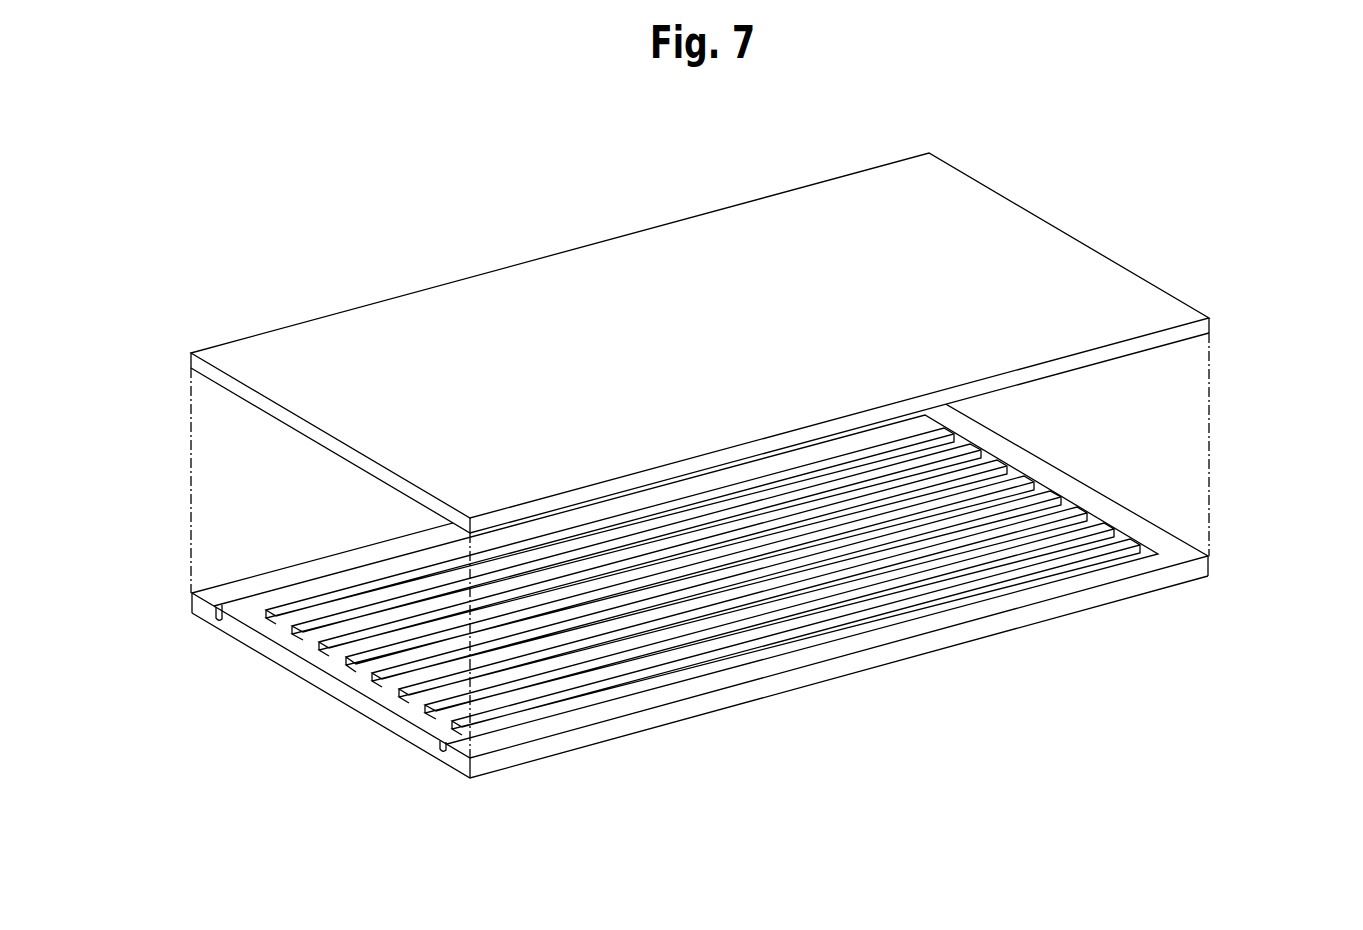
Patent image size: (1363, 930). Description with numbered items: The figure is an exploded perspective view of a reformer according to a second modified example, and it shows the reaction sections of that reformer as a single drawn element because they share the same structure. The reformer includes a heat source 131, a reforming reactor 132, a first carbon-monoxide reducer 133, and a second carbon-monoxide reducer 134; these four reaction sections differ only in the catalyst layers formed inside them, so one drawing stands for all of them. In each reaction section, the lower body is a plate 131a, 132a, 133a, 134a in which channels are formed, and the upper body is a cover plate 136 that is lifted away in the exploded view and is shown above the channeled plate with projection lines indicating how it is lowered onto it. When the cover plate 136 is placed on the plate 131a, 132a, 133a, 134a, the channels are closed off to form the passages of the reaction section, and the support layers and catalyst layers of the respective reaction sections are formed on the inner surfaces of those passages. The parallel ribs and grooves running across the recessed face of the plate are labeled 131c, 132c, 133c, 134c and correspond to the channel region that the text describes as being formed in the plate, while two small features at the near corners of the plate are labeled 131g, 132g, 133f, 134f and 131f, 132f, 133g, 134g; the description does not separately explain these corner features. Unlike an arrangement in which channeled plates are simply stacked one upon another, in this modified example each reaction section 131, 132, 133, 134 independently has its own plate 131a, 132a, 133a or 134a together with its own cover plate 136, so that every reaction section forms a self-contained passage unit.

The heat source 131 is at (706, 489).
The reforming reactor 132 is at (706, 489).
The first carbon-monoxide reducer 133 is at (706, 489).
The second carbon-monoxide reducer 134 is at (1183, 209).
The cover plate 136 is at (1023, 210).
The plate 131a is at (630, 610).
The plate 132a is at (630, 610).
The plate 133a is at (630, 610).
The plate 134a is at (630, 610).
The flow channel ribs of first plate 131c is at (703, 595).
The flow channel ribs of second plate 132c is at (703, 595).
The flow channel ribs of third plate 133c is at (703, 595).
The flow channel ribs of fourth plate 134c is at (627, 677).
The port notch of first plate 131g is at (191, 670).
The port notch of second plate 132g is at (191, 670).
The port notch of third plate 133f is at (191, 670).
The port notch of fourth plate 134f is at (221, 621).
The port notch of first plate 131f is at (282, 783).
The port notch of second plate 132f is at (282, 783).
The port notch of third plate 133g is at (282, 783).
The port notch of fourth plate 134g is at (442, 751).